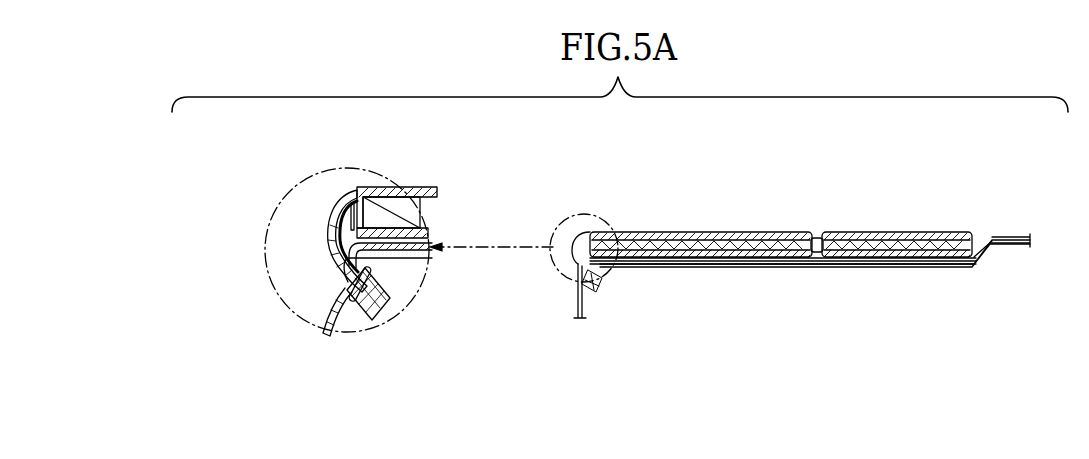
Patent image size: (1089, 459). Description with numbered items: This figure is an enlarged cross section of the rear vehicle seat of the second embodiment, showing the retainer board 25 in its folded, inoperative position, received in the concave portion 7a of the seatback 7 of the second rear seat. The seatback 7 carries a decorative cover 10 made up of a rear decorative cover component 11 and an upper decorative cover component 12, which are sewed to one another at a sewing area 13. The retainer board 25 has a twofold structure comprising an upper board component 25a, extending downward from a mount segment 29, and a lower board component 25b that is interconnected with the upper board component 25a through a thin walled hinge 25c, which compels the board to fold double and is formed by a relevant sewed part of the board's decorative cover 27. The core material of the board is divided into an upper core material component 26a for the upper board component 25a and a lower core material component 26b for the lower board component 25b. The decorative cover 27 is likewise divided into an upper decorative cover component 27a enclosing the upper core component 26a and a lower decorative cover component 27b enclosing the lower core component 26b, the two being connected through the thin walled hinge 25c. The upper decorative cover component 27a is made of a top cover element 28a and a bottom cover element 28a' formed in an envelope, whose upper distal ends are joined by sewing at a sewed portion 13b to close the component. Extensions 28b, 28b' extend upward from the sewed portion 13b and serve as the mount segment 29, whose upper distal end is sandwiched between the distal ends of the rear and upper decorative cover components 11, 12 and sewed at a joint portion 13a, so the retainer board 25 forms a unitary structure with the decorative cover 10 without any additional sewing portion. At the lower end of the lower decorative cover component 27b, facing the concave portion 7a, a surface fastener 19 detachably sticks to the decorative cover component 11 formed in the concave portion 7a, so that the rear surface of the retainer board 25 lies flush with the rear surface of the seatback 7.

The seatback 7 is at (1010, 233).
The concave portion 7a is at (978, 240).
The decorative cover 10 is at (664, 318).
The rear decorative cover component 11 is at (414, 258).
The upper decorative cover component 12 is at (334, 318).
The sewing area 13 is at (578, 267).
The joint portion 13a is at (360, 313).
The sewed portion 13b is at (353, 198).
The surface fastener 19 is at (950, 268).
The retainer board 25 is at (795, 186).
The upper board component 25a is at (699, 150).
The lower board component 25b is at (944, 150).
The thin walled hinge 25c is at (820, 235).
The upper core material component 26a is at (638, 243).
The lower core material component 26b is at (890, 243).
The decorative cover 27 is at (747, 229).
The upper decorative cover component 27a is at (497, 152).
The lower decorative cover component 27b is at (868, 232).
The top cover element 28a is at (427, 217).
The bottom cover element 28a' is at (430, 189).
The extension 28b is at (288, 226).
The extension 28b' is at (284, 236).
The mount segment 29 is at (213, 160).